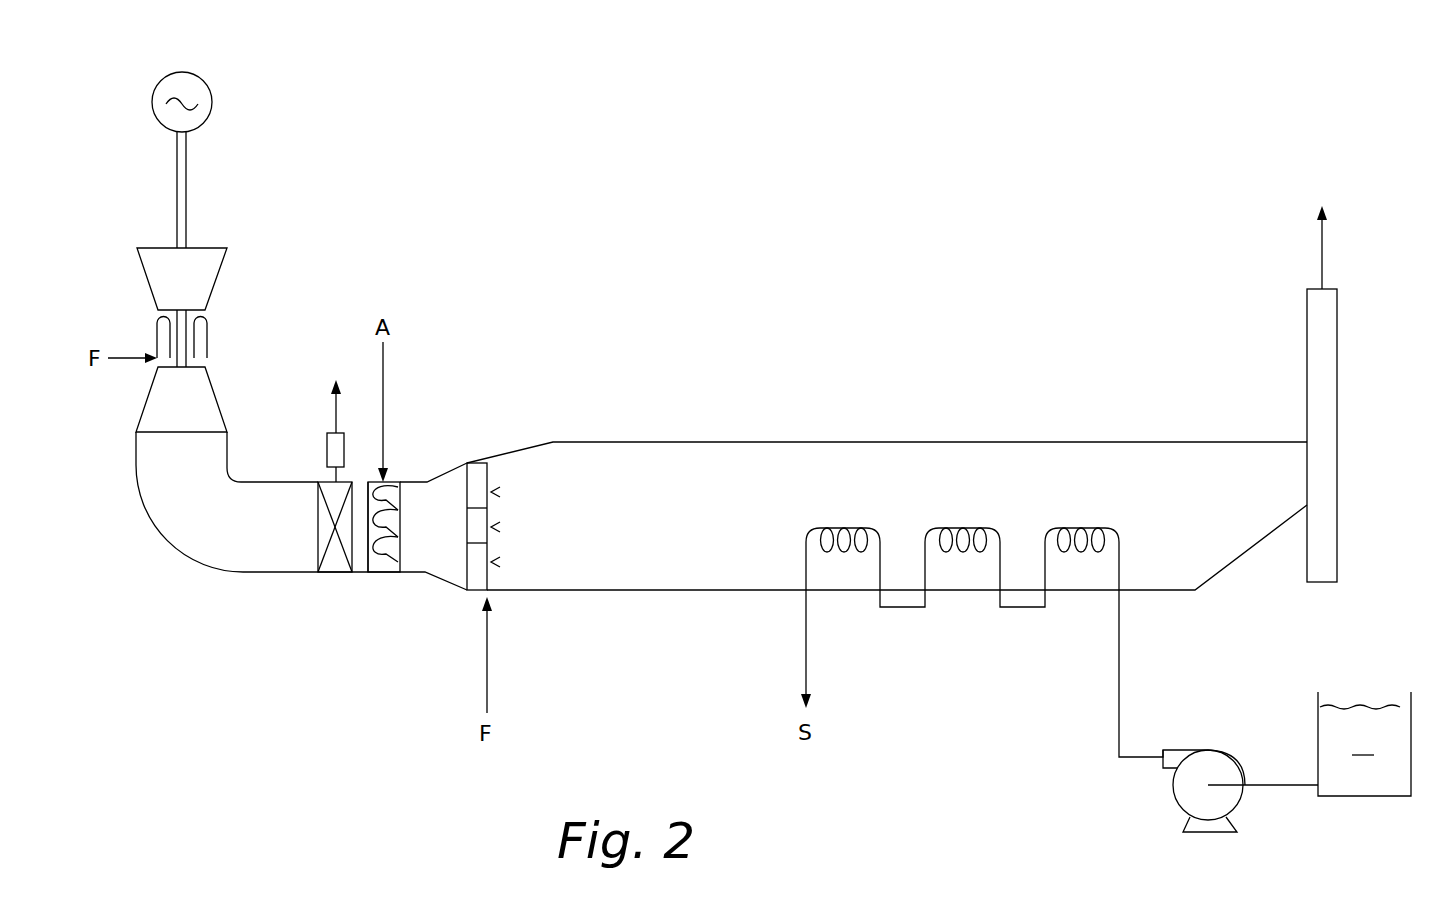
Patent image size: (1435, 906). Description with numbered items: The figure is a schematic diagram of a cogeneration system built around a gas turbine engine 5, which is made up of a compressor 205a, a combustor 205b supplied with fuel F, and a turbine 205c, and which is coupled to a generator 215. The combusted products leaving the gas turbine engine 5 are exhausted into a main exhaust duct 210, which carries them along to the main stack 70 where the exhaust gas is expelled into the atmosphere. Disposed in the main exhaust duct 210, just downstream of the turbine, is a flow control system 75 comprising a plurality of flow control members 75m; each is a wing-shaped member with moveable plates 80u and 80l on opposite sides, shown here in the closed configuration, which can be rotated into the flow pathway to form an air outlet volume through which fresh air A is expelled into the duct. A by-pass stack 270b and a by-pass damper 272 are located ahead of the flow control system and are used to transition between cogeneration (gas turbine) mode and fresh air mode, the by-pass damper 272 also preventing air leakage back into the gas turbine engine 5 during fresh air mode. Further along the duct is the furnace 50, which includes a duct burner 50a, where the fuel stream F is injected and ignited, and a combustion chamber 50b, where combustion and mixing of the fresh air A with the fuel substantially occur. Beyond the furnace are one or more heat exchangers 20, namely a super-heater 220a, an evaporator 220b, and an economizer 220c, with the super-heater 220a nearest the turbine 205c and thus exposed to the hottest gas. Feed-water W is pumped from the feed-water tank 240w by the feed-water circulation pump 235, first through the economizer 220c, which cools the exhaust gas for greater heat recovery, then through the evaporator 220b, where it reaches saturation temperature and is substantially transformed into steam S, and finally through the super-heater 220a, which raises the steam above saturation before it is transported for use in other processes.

The generator 215 is at (163, 78).
The gas turbine engine 5 is at (145, 224).
The compressor 205a is at (147, 273).
The combustor 205b is at (208, 340).
The turbine 205c is at (218, 403).
The main exhaust duct 210 is at (165, 542).
The by-pass stack 270b is at (327, 450).
The by-pass damper 272 is at (333, 572).
The flow control system 75 is at (385, 572).
The upper moveable plate 80u is at (385, 494).
The lower moveable plate 80l is at (400, 506).
The flow control member 75m is at (395, 546).
The furnace 50 is at (708, 398).
The duct burner 50a is at (465, 605).
The combustion chamber 50b is at (592, 530).
The super-heater 220a is at (850, 528).
The evaporator 220b is at (970, 528).
The economizer 220c is at (1089, 528).
The heat exchangers 20 is at (960, 666).
The main stack 70 is at (1337, 555).
The feed-water circulation pump 235 is at (1200, 750).
The feed-water tank 240w is at (1358, 796).